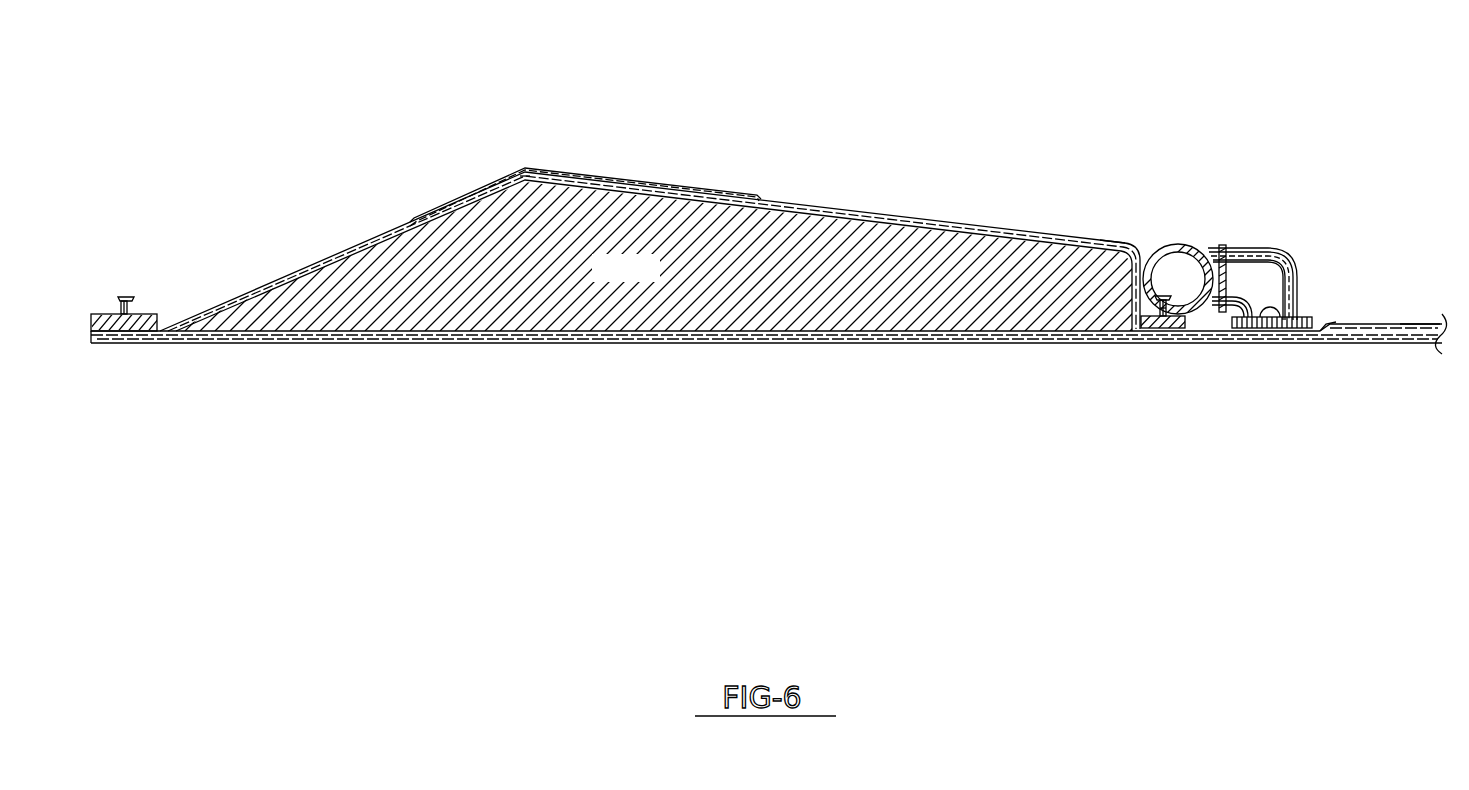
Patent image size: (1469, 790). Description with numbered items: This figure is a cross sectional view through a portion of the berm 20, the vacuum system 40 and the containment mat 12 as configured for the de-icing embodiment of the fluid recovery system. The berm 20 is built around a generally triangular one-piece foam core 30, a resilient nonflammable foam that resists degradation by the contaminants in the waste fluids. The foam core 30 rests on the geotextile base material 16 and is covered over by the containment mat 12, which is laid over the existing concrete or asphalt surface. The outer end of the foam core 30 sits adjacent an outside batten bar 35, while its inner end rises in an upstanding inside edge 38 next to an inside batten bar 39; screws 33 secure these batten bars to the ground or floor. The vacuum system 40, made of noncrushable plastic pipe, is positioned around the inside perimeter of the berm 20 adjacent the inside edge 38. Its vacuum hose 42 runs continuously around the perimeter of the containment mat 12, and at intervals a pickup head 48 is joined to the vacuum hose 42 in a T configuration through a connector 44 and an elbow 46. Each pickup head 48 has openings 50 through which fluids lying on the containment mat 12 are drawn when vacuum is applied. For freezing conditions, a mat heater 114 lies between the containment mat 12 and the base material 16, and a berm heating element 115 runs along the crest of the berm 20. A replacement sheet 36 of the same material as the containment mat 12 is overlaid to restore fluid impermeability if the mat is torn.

The containment mat 12 is at (310, 255).
The base material 16 is at (250, 343).
The berm 20 is at (708, 68).
The foam core 30 is at (650, 277).
The screws 33 is at (129, 296).
The outside batten bar 35 is at (93, 314).
The replacement sheet 36 is at (435, 215).
The inside edge 38 is at (1078, 233).
The inside batten bar 39 is at (1167, 330).
The vacuum system 40 is at (1224, 296).
The vacuum hose 42 is at (1167, 243).
The connector 44 is at (1213, 245).
The elbow 46 is at (1292, 266).
The pickup head 48 is at (1287, 330).
The openings 50 is at (1262, 330).
The mat heater 114 is at (1400, 343).
The berm heating element 115 is at (546, 172).